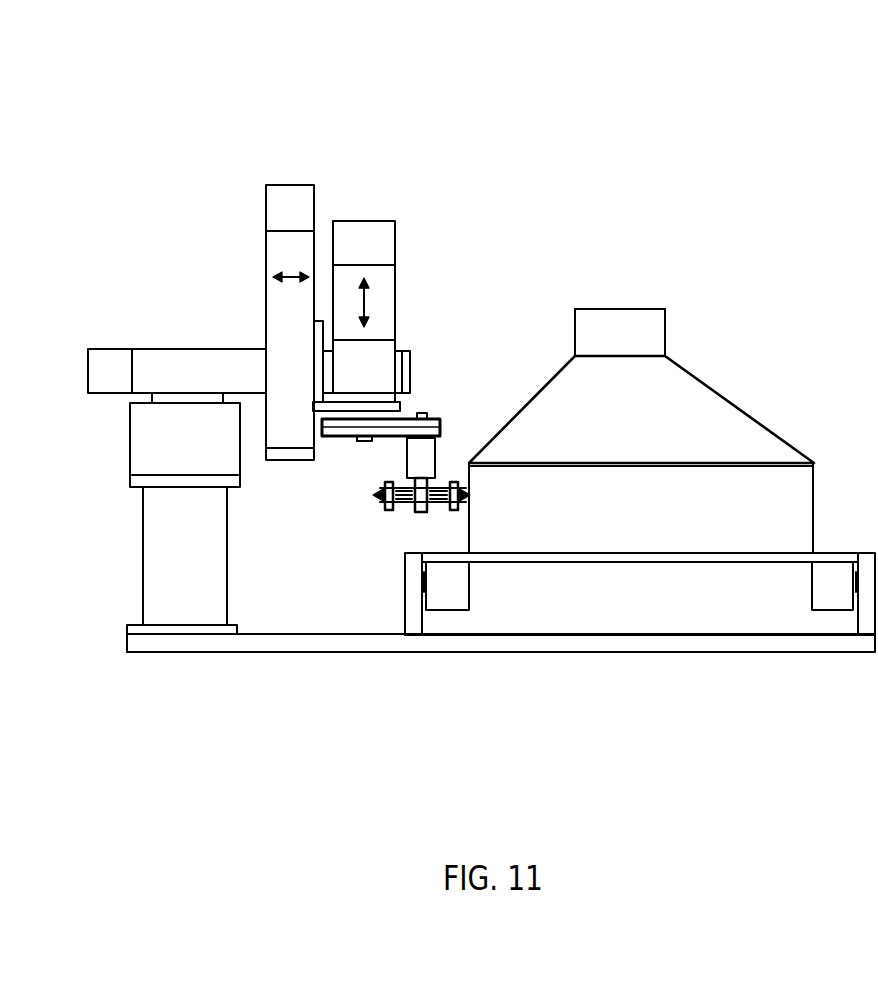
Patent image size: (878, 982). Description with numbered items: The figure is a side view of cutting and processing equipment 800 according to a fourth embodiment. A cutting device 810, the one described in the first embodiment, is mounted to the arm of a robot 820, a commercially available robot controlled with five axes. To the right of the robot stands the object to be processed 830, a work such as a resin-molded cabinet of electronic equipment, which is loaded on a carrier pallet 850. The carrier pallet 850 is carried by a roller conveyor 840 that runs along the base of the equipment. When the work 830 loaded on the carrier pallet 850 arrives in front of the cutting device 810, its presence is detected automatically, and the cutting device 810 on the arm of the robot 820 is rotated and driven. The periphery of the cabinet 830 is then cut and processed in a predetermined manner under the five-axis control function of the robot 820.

The cutting and processing equipment 800 is at (284, 127).
The cutting device 810 is at (403, 508).
The robot 820 is at (360, 233).
The object to be processed 830 is at (690, 402).
The roller conveyor 840 is at (833, 595).
The carrier pallet 850 is at (608, 558).